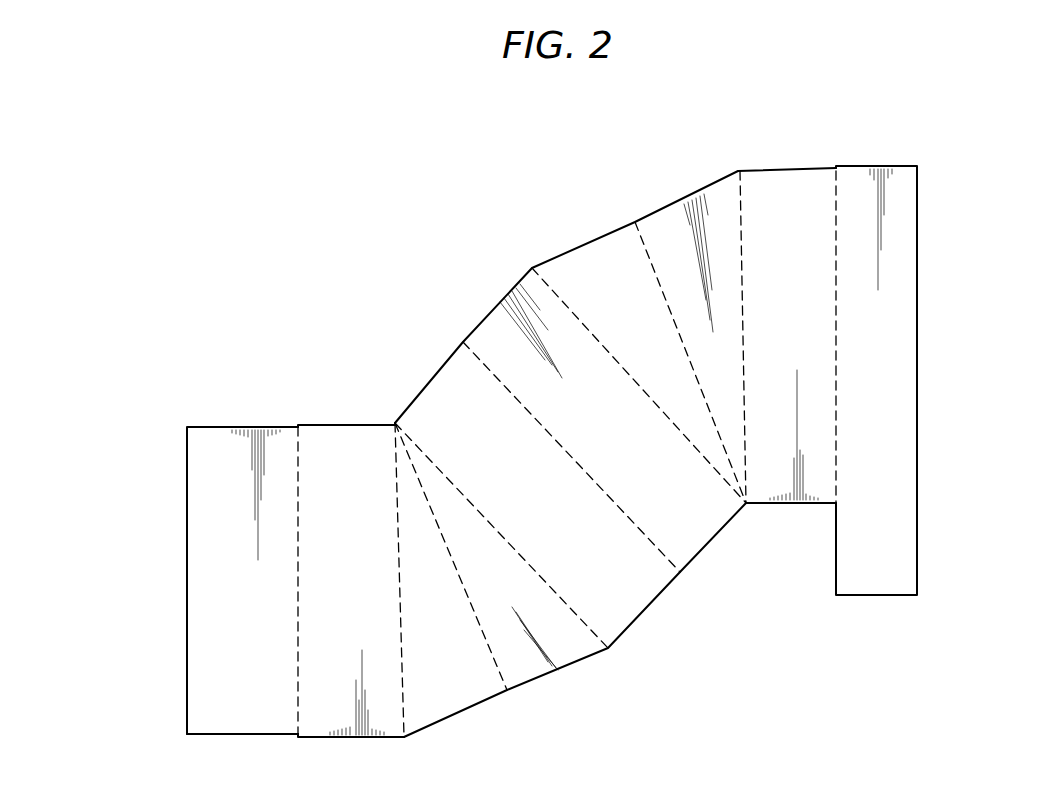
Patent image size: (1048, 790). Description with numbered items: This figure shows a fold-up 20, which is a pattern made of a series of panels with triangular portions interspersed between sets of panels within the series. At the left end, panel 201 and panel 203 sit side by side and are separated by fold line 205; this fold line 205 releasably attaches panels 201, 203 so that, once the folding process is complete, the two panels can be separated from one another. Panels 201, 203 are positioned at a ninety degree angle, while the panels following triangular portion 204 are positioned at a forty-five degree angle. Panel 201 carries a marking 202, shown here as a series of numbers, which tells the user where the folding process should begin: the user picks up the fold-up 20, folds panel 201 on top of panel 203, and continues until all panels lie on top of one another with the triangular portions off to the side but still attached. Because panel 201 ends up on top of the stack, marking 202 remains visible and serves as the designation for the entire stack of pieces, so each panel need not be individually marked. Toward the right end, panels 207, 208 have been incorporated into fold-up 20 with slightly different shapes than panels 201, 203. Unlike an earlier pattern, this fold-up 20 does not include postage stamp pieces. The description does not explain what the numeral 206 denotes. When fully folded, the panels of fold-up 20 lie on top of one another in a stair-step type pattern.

The fold-up 20 is at (567, 159).
The panel 201 is at (200, 685).
The marking 202 is at (194, 570).
The panel 203 is at (350, 440).
The triangular portion 204 is at (517, 692).
The fold line 205 is at (297, 688).
The bottom edge 206 is at (298, 738).
The panel 207 is at (917, 486).
The panel 208 is at (797, 505).